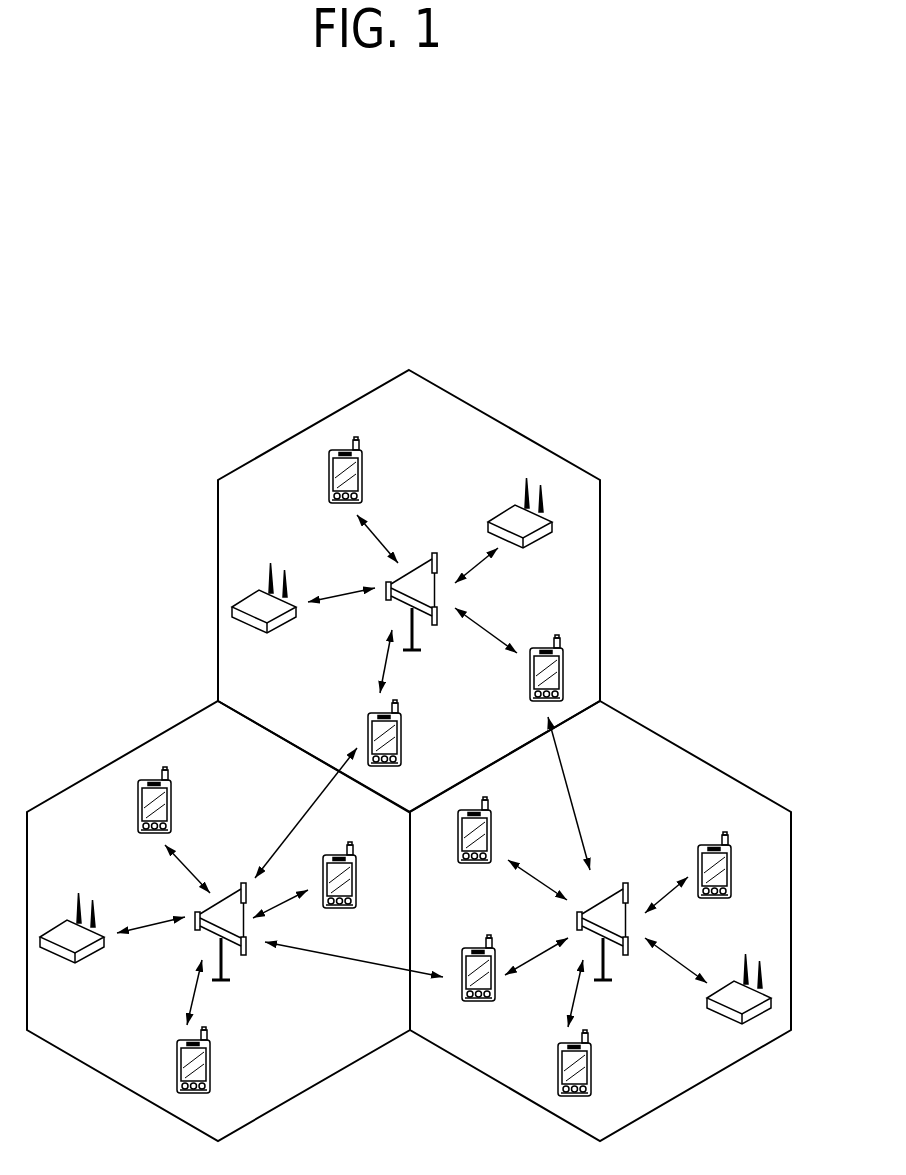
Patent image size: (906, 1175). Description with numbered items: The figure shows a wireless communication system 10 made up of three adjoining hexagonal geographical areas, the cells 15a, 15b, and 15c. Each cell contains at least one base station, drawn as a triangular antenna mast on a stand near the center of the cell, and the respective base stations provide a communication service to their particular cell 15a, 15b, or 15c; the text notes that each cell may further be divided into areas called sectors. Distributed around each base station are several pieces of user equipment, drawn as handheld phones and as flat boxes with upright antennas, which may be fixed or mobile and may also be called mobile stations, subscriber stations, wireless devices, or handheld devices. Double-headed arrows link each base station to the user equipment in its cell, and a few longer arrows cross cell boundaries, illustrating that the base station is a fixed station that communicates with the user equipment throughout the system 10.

The wireless communication system 10 is at (683, 487).
The cell 15a is at (601, 576).
The cell 15b is at (721, 771).
The cell 15c is at (93, 773).